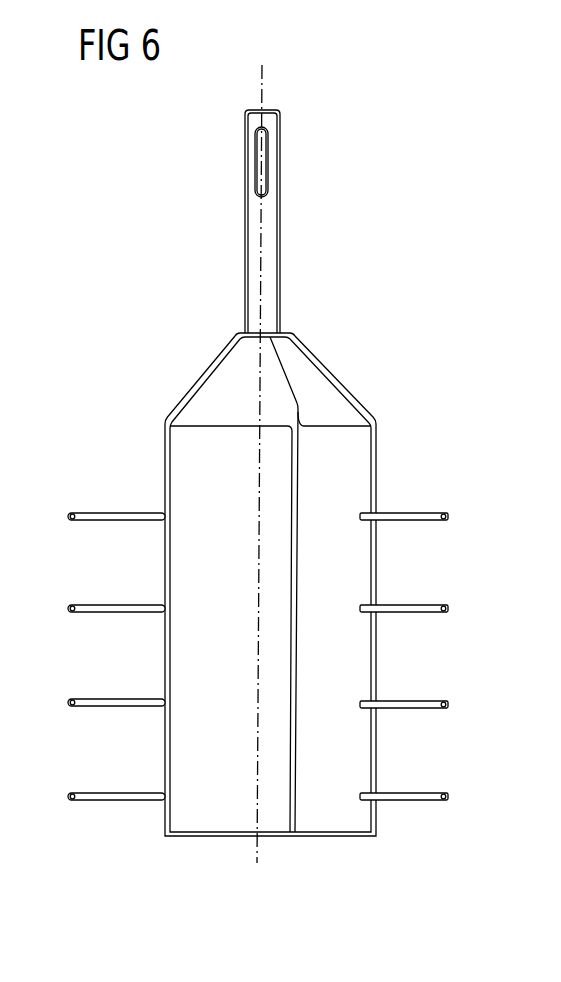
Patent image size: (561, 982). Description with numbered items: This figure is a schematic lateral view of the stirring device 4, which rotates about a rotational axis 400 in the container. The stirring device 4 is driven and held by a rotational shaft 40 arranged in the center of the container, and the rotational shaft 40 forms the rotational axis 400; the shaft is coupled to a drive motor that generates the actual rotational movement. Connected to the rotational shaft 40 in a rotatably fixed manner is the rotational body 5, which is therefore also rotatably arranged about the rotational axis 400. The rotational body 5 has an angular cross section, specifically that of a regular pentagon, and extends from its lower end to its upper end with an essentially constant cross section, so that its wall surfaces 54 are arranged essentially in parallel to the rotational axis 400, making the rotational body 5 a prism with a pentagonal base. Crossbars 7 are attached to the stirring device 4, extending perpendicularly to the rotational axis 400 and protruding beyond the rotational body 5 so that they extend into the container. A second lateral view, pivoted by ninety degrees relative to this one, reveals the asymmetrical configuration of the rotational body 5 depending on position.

The rotational axis 400 is at (262, 79).
The stirring device 4 is at (258, 473).
The rotational shaft 40 is at (272, 212).
The rotational body 5 is at (365, 458).
The wall surfaces 54 is at (185, 473).
The crossbars 7 is at (87, 512).